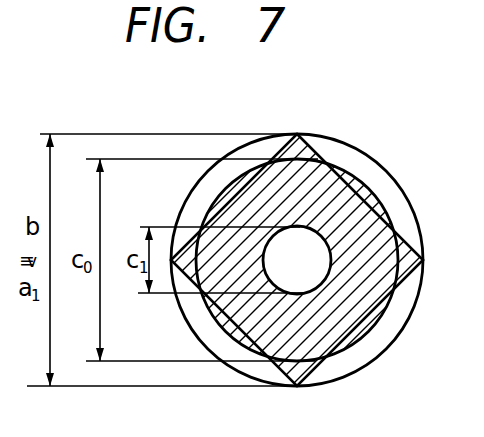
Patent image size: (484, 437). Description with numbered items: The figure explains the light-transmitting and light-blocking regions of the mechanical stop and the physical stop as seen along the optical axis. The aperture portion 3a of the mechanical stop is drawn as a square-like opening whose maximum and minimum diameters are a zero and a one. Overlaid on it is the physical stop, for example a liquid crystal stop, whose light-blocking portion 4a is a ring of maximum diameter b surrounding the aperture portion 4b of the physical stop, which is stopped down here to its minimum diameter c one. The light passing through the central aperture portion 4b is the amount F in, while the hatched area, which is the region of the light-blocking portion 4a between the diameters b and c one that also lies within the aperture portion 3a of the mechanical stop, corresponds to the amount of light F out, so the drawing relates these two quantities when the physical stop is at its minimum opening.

The aperture portion 3a is at (360, 185).
The light-blocking portion 4a is at (408, 197).
The aperture portion 4b is at (318, 278).